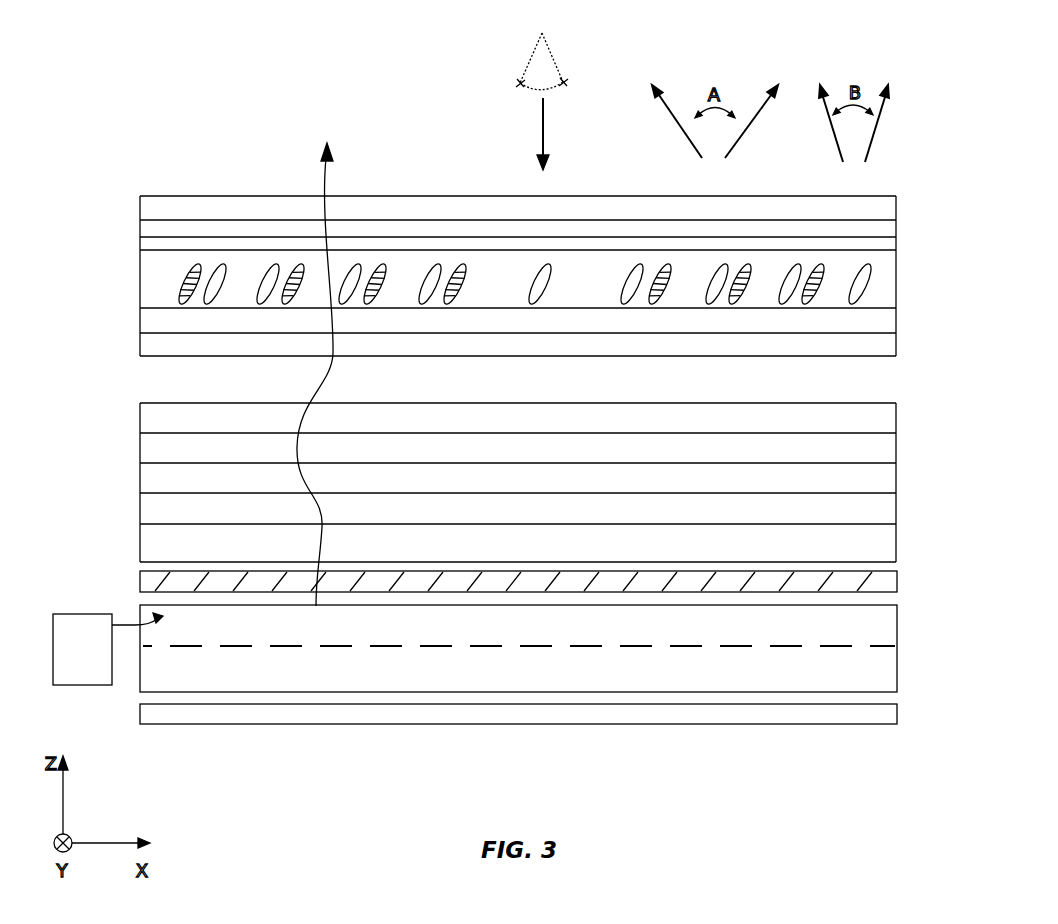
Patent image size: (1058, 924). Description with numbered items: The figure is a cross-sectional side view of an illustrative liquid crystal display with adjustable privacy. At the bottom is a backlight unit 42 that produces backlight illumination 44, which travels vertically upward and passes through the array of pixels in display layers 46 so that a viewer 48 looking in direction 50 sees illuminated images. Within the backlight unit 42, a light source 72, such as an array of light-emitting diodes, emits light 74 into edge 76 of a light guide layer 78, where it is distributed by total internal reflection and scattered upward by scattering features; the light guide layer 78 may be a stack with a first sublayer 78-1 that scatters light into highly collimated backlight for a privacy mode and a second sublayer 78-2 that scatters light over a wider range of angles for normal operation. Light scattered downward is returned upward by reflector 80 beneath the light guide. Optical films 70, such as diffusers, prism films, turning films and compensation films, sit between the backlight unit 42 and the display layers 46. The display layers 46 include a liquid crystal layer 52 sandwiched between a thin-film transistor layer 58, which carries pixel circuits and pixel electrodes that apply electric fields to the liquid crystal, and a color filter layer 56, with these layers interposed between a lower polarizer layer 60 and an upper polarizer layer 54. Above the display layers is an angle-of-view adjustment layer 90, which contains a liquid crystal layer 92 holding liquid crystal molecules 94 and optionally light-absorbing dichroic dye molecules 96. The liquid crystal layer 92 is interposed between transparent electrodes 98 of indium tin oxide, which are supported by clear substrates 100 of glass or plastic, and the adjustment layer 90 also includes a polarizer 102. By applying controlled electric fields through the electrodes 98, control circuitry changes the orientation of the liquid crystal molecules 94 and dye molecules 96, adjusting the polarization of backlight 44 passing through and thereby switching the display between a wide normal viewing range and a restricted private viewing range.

The backlight unit 42 is at (908, 723).
The backlight illumination 44 is at (322, 188).
The display layers 46 is at (908, 562).
The viewer 48 is at (552, 60).
The viewing direction 50 is at (543, 130).
The liquid crystal layer 52 is at (140, 480).
The upper polarizer layer 54 is at (140, 421).
The color filter layer 56 is at (140, 451).
The thin-film transistor layer 58 is at (140, 509).
The lower polarizer layer 60 is at (140, 541).
The optical films 70 is at (140, 583).
The light source 72 is at (87, 677).
The light 74 is at (128, 627).
The edge of light guide layer 76 is at (140, 612).
The light guide layer 78 is at (840, 683).
The first light guide sublayer 78-1 is at (377, 678).
The second light guide sublayer 78-2 is at (465, 628).
The reflector 80 is at (230, 718).
The angle-of-view adjustment layer 90 is at (908, 356).
The liquid crystal layer 92 is at (140, 288).
The liquid crystal molecules 94 is at (224, 262).
The dichroic dye molecules 96 is at (193, 263).
The transparent electrodes 98 is at (598, 320).
The clear substrates 100 is at (750, 345).
The polarizer 102 is at (140, 210).